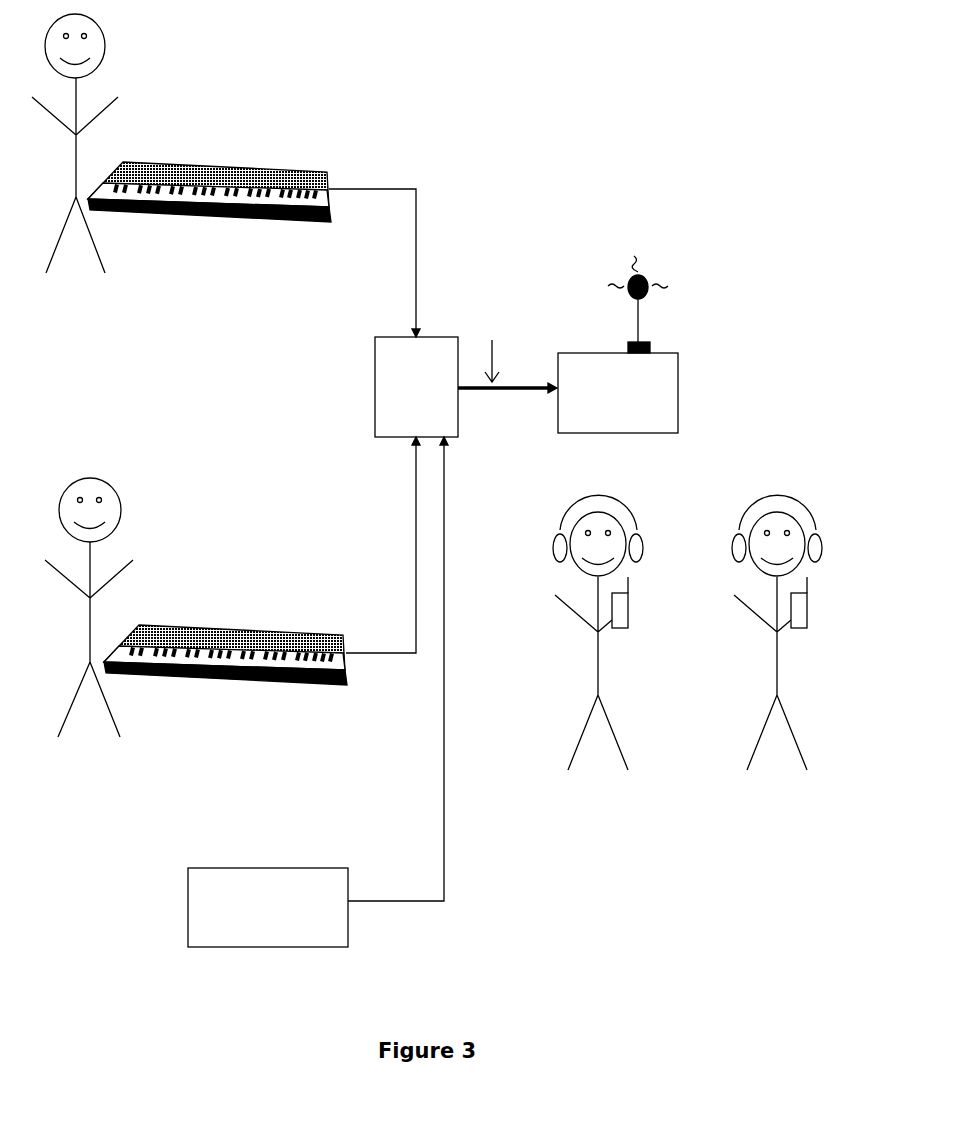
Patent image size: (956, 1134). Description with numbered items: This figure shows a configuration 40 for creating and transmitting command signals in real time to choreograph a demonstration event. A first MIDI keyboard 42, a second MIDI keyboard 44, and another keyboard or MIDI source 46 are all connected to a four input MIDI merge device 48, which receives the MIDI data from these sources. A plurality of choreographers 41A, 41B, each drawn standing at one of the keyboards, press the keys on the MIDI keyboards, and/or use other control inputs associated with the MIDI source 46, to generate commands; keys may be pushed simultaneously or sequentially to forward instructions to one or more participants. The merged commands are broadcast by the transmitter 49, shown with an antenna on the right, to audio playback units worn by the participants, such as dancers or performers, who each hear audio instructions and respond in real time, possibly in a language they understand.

The configuration 40 is at (552, 139).
The choreographer 41A is at (93, 143).
The choreographer 41B is at (104, 607).
The first MIDI keyboard 42 is at (209, 182).
The second MIDI keyboard 44 is at (225, 646).
The MIDI source 46 is at (268, 907).
The four input MIDI merge device 48 is at (416, 387).
The transmitter 49 is at (618, 344).